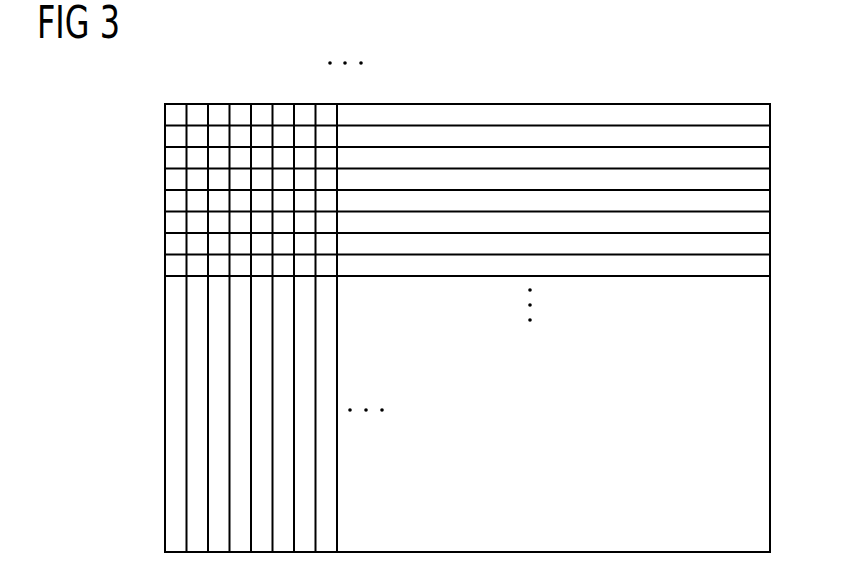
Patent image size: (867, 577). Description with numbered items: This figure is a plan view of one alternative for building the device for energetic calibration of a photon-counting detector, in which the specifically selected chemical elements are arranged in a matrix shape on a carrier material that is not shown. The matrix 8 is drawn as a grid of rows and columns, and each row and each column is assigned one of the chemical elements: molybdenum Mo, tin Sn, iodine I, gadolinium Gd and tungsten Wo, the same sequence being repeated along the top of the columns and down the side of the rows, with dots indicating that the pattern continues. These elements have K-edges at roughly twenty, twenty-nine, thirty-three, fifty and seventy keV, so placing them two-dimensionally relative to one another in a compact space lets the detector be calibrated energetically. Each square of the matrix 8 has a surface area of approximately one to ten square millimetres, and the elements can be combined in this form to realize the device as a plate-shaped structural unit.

The matrix / grid 8 is at (327, 264).
The molybdenum Mo is at (175, 118).
The tin Sn is at (202, 118).
The iodine I is at (223, 118).
The gadolinium Gd is at (243, 118).
The tungsten Wo is at (258, 118).